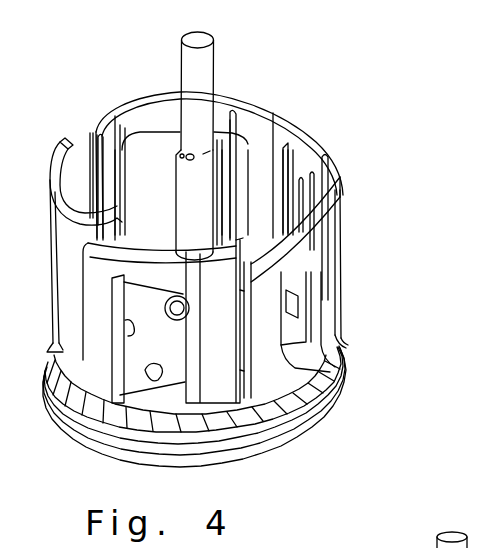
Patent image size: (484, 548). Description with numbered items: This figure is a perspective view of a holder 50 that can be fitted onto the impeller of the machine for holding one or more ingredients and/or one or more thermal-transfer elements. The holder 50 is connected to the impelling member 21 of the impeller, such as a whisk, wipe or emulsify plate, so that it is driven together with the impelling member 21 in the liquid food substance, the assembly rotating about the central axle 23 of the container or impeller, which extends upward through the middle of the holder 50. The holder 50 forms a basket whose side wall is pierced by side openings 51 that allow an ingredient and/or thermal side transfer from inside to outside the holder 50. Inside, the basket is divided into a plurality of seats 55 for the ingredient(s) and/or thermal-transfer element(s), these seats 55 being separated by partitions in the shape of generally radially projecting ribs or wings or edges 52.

The impelling member 21 is at (325, 377).
The central axle 23 is at (206, 71).
The holder 50 is at (362, 113).
The side openings 51 is at (325, 310).
The ribs or wings or edges 52 is at (117, 219).
The seats 55 is at (243, 187).